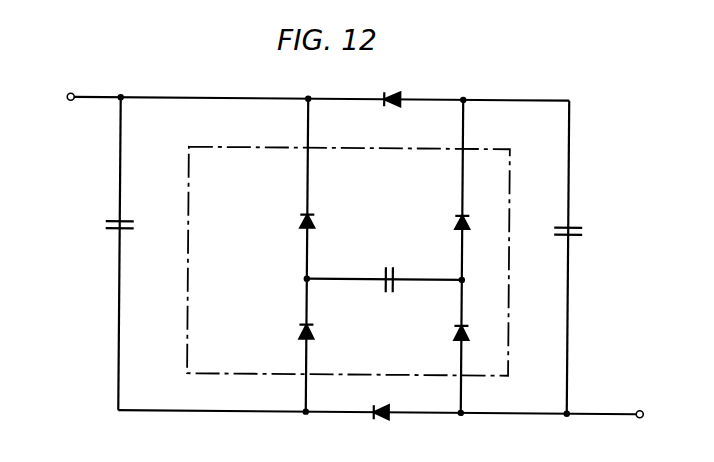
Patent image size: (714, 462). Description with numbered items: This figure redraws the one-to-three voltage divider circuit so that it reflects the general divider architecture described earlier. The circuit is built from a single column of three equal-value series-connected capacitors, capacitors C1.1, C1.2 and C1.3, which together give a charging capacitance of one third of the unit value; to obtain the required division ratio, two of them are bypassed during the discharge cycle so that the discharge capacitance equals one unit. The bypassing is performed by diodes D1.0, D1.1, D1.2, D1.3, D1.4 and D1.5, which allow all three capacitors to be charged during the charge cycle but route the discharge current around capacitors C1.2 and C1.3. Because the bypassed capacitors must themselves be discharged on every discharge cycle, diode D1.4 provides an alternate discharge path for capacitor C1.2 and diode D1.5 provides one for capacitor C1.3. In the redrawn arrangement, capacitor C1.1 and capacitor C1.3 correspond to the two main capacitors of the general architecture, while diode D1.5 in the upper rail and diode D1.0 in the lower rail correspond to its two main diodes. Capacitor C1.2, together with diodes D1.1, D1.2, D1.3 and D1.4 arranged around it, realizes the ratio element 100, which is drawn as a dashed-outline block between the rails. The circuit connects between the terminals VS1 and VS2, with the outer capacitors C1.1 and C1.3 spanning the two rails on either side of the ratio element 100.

The ratio element 100 is at (348, 261).
The capacitor C1.1 is at (134, 228).
The capacitor C1.2 is at (389, 269).
The capacitor C1.3 is at (581, 234).
The diode D1.0 is at (382, 424).
The diode D1.1 is at (444, 335).
The diode D1.2 is at (321, 334).
The diode D1.3 is at (445, 226).
The diode D1.4 is at (322, 225).
The diode D1.5 is at (392, 89).
The supply voltage terminal VS1 is at (56, 92).
The supply voltage terminal VS2 is at (653, 420).